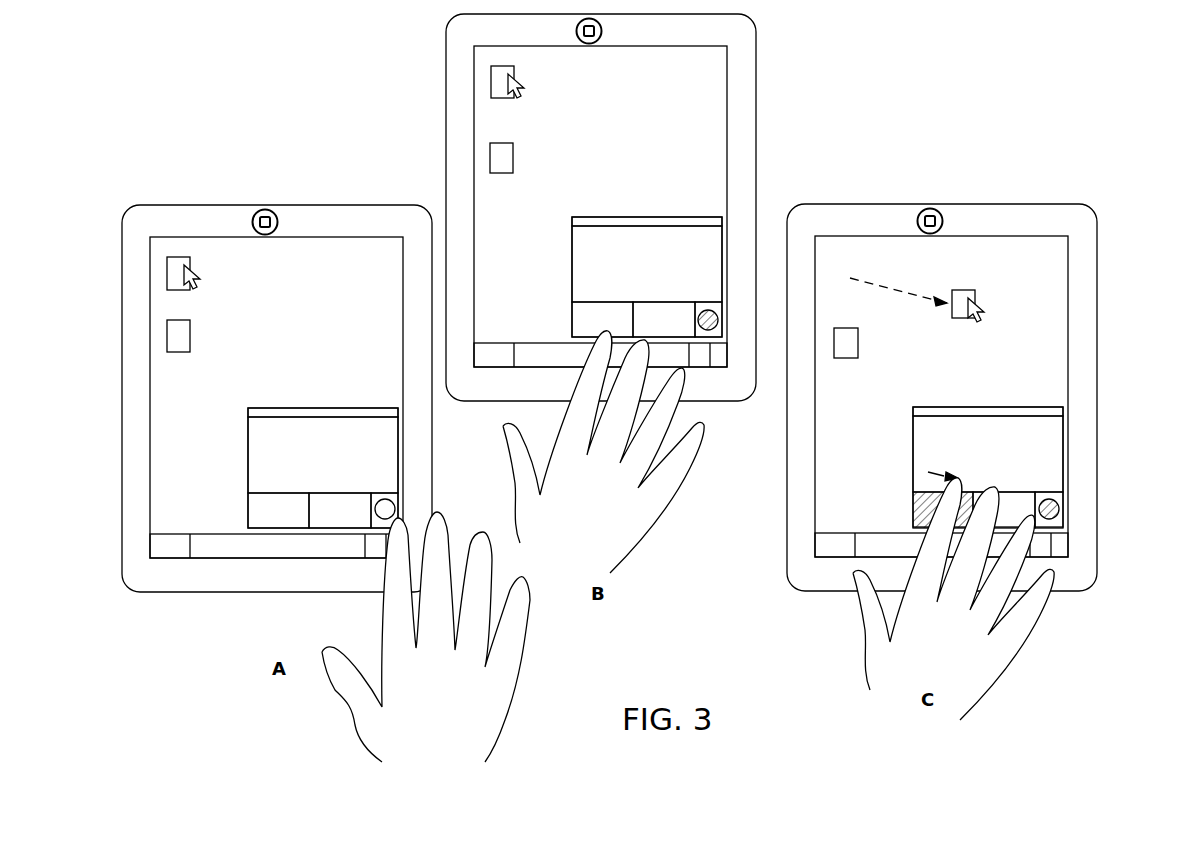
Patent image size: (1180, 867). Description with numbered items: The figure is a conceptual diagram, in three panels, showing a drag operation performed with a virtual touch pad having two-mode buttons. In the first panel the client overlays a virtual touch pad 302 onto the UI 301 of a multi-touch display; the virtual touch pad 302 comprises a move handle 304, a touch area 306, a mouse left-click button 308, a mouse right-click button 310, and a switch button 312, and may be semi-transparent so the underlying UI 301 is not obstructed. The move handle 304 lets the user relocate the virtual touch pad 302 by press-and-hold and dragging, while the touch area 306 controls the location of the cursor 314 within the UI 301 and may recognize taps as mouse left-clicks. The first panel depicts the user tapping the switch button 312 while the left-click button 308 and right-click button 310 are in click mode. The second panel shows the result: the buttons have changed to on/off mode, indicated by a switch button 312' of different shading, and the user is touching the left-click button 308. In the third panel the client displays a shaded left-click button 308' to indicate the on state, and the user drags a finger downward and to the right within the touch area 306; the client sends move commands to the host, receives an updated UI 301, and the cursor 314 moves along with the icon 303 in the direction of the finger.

The UI 301 is at (609, 303).
The virtual touch pad 302 is at (655, 353).
The icon 303 is at (572, 225).
The move handle 304 is at (655, 298).
The touch area 306 is at (655, 336).
The mouse left-click button 308 is at (416, 415).
The shaded left-click button 308' is at (917, 500).
The mouse right-click button 310 is at (713, 446).
The switch button 312 is at (415, 490).
The switch button in on/off mode 312' is at (910, 394).
The cursor 314 is at (597, 197).